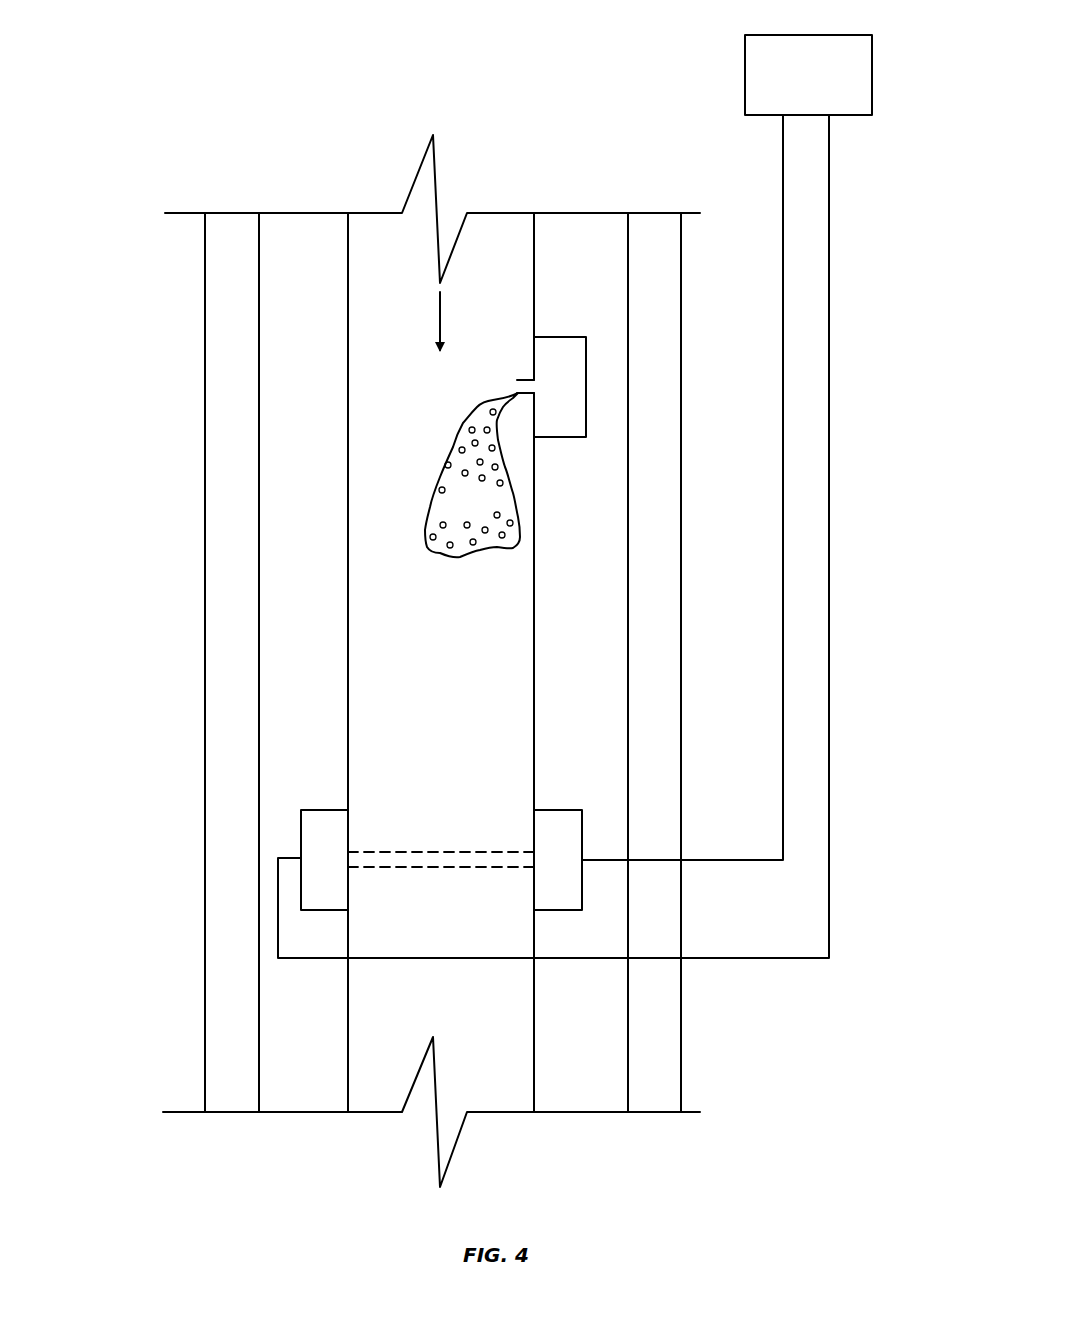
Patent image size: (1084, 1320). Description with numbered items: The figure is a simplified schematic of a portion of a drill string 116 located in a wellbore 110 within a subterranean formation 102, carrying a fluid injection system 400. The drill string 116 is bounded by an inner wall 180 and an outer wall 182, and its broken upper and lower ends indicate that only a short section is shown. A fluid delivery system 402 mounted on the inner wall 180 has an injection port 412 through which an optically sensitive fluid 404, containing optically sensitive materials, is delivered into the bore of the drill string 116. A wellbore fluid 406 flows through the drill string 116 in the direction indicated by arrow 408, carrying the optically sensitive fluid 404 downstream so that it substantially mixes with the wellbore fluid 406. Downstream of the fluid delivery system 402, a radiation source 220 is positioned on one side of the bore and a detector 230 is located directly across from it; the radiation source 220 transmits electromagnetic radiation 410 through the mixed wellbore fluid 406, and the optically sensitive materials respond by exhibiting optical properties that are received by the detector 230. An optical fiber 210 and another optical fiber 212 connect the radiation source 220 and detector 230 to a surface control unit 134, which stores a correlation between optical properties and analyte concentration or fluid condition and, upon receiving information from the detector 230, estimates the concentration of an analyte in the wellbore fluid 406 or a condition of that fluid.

The subterranean formation 102 is at (98, 564).
The wellbore 110 is at (190, 860).
The drill string 116 is at (319, 564).
The surface control unit 134 is at (825, 86).
The inner wall 180 is at (348, 401).
The outer wall 182 is at (259, 367).
The optical fiber 210 is at (783, 281).
The another optical fiber 212 is at (829, 339).
The radiation source 220 is at (576, 869).
The detector 230 is at (342, 869).
The fluid injection system 400 is at (625, 118).
The fluid delivery system 402 is at (578, 398).
The optically sensitive fluid 404 is at (488, 516).
The wellbore fluid 406 is at (459, 661).
The arrow 408 is at (443, 318).
The electromagnetic radiation 410 is at (448, 852).
The injection port 412 is at (524, 378).